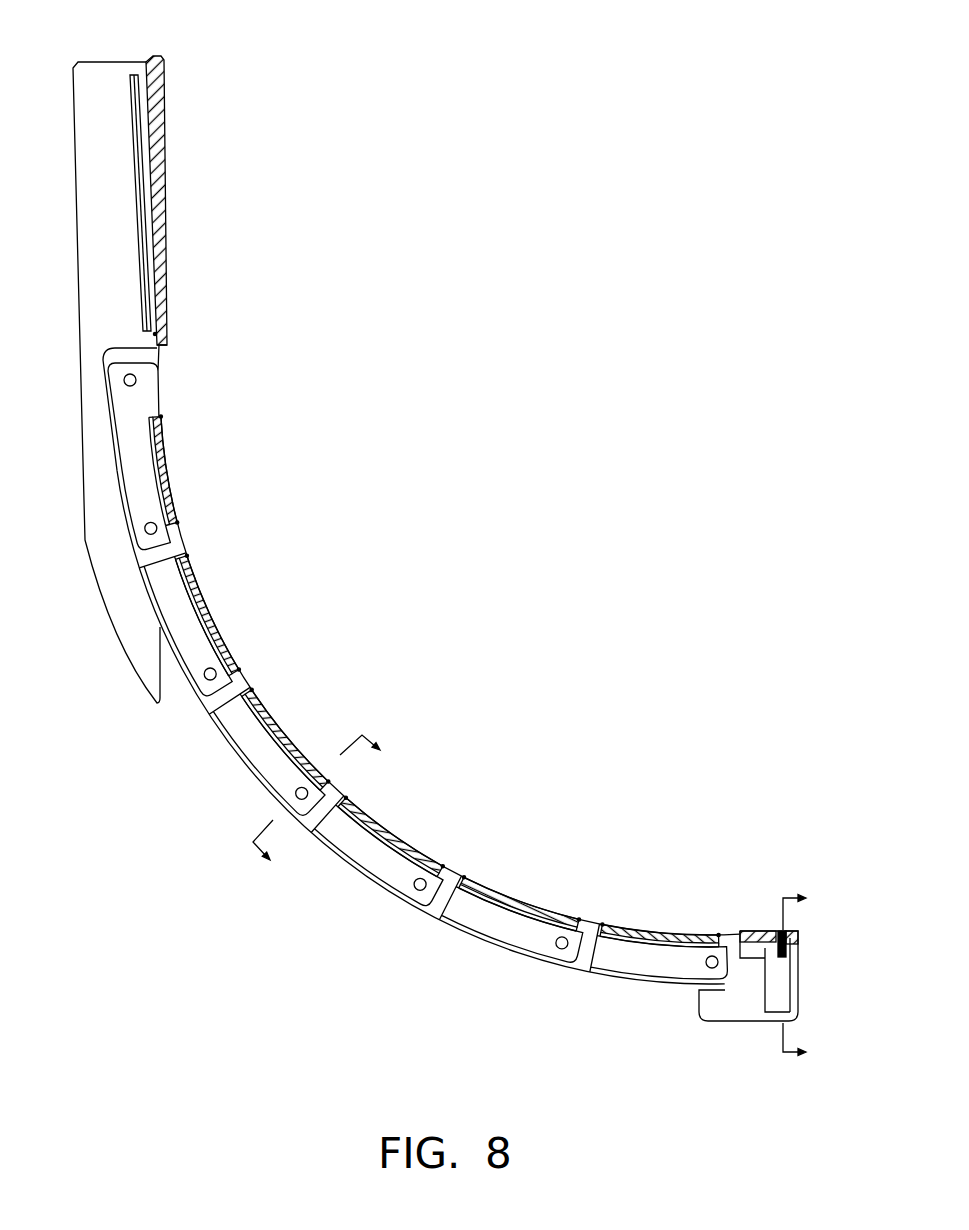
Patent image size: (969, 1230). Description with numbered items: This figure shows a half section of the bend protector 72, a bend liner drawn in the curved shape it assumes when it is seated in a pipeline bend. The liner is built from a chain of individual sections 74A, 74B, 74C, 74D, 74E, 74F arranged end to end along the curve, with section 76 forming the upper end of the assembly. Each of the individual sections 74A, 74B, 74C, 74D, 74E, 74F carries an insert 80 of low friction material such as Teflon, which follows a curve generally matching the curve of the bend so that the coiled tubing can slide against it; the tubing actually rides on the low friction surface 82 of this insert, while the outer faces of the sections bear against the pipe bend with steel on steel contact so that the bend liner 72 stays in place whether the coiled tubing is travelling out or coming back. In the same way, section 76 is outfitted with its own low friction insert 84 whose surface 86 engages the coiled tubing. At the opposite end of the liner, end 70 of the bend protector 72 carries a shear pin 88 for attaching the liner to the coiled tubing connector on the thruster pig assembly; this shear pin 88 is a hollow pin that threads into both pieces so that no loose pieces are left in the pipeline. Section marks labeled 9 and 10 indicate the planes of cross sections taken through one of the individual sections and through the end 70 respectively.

The end 70 is at (795, 965).
The bend protector 72 is at (413, 413).
The individual section 74A is at (170, 463).
The individual section 74B is at (203, 597).
The individual section 74C is at (367, 689).
The individual section 74D is at (393, 832).
The individual section 74E is at (515, 892).
The individual section 74F is at (660, 930).
The section 76 is at (152, 158).
The insert 80 is at (268, 703).
The surface 82 is at (288, 723).
The low friction insert 84 is at (145, 192).
The surface 86 is at (148, 242).
The shear pin 88 is at (797, 932).
The section line 9 is at (326, 810).
The section line 10 is at (815, 979).